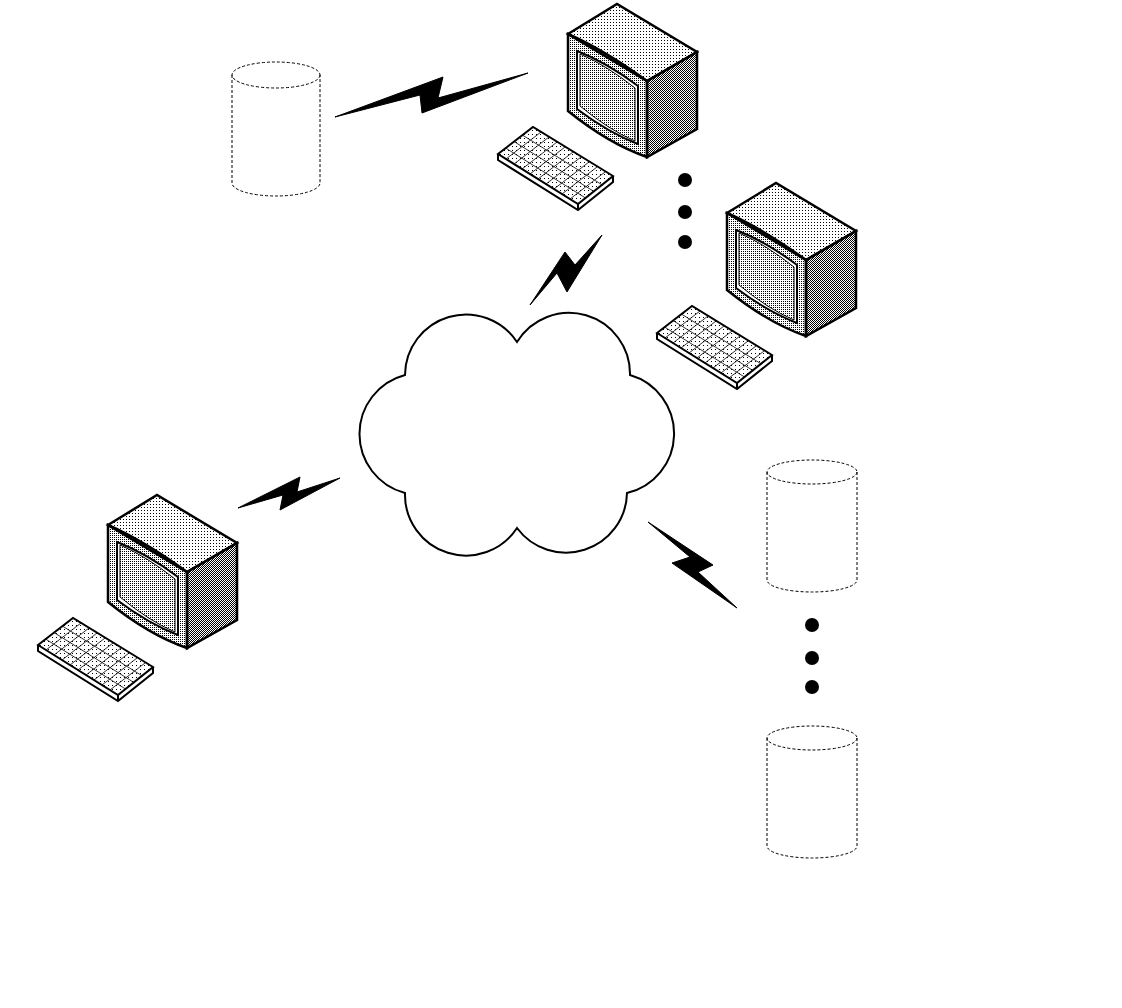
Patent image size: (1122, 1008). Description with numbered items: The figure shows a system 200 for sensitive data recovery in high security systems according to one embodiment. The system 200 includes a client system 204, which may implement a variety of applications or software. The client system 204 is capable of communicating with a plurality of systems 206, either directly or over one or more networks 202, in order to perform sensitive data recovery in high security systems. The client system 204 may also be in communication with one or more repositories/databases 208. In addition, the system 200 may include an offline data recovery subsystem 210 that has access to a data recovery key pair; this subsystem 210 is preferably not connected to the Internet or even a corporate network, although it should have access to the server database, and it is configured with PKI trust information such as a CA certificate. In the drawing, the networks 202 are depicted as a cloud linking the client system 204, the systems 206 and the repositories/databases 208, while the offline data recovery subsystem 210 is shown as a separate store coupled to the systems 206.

The system 200 is at (1054, 128).
The network 202 is at (505, 448).
The client system 204 is at (180, 437).
The systems 206 is at (841, 95).
The repositories/databases 208 is at (895, 520).
The offline data recovery subsystem 210 is at (260, 150).